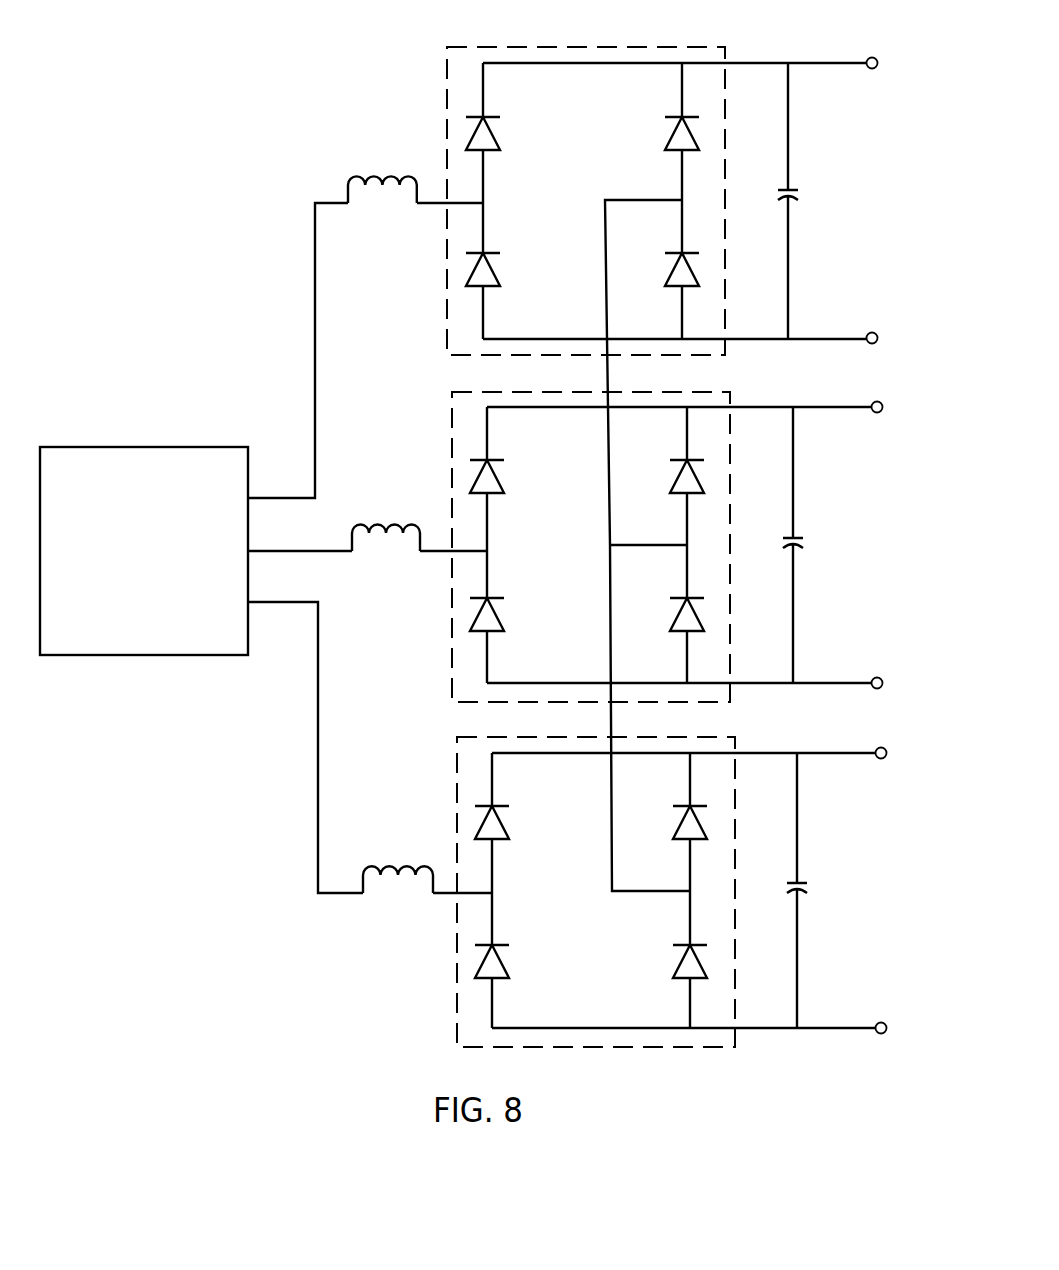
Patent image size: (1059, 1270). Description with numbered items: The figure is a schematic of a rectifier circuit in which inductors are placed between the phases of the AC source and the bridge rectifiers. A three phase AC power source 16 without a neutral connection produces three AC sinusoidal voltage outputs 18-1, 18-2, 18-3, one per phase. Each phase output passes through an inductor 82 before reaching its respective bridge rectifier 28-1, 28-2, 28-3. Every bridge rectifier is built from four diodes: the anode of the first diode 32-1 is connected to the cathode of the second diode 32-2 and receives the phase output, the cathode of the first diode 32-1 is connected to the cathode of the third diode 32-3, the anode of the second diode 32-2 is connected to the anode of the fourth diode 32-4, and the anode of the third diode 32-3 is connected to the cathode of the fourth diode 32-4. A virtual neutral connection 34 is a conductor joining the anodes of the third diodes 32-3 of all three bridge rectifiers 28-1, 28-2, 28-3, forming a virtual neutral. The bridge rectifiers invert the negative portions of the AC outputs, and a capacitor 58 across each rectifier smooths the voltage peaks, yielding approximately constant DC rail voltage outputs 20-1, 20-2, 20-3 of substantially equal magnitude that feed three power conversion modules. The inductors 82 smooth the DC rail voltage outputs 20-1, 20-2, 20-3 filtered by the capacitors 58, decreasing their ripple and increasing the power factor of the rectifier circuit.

The three phase AC power source 16 is at (90, 447).
The AC sinusoidal voltage output 18-1 is at (315, 342).
The AC sinusoidal voltage output 18-2 is at (336, 551).
The AC sinusoidal voltage output 18-3 is at (318, 703).
The inductor 82 is at (355, 179).
The bridge rectifier 28-1 is at (515, 47).
The bridge rectifier 28-2 is at (465, 392).
The bridge rectifier 28-3 is at (470, 737).
The first diode 32-1 is at (497, 136).
The second diode 32-2 is at (497, 272).
The third diode 32-3 is at (669, 134).
The fourth diode 32-4 is at (671, 275).
The virtual neutral connection 34 is at (610, 506).
The capacitor 58 is at (782, 190).
The DC rail voltage output 20-1 is at (829, 63).
The DC rail voltage output 20-2 is at (833, 407).
The DC rail voltage output 20-3 is at (838, 753).